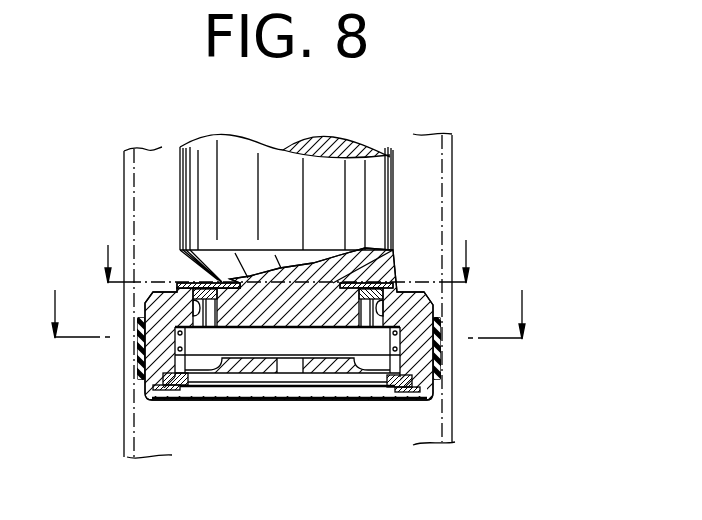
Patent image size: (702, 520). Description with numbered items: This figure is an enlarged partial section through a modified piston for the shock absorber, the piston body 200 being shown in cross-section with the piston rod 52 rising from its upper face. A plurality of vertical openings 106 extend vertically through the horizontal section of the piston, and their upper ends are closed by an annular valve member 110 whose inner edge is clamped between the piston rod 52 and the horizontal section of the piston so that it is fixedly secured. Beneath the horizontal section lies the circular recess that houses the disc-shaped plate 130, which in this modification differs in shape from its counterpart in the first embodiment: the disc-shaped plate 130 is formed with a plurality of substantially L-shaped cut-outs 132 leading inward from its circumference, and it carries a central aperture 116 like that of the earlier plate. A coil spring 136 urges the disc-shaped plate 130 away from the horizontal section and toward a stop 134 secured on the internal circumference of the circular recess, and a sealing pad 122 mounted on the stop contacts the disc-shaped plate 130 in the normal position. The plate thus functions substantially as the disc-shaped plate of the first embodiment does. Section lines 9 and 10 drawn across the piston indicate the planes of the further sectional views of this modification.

The section line 9- 9 is at (286, 245).
The section line 10- 10 is at (288, 297).
The piston rod 52 is at (367, 187).
The vertical openings 106 is at (198, 317).
The annular valve member 110 is at (388, 281).
The aperture 116 is at (288, 366).
The sealing pad 122 is at (413, 358).
The disc-shaped plate 130 is at (247, 368).
The L-shaped cut-outs 132 is at (140, 370).
The stop 134 is at (165, 388).
The coil spring 136 is at (185, 357).
The housing 200 is at (430, 302).